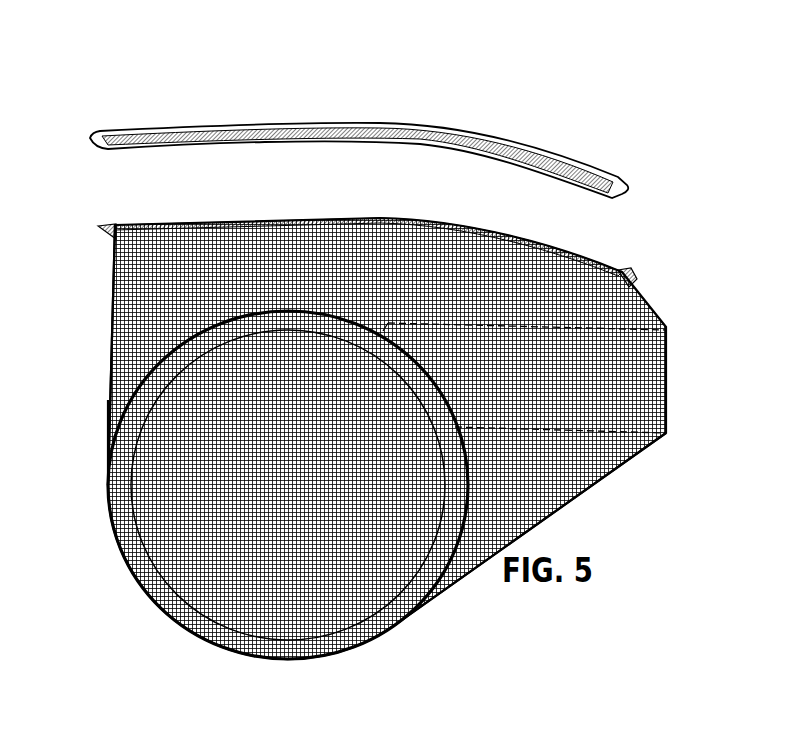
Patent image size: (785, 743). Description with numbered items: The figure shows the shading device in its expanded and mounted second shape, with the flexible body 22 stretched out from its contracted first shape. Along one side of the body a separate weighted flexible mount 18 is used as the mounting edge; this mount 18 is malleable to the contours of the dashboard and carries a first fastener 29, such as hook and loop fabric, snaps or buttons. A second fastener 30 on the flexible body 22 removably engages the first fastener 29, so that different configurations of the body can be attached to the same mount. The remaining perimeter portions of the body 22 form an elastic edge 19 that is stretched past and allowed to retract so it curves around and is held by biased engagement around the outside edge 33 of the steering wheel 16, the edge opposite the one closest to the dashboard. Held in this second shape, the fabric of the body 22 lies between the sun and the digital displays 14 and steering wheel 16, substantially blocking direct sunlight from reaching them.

The digital displays 14 is at (638, 370).
The steering wheel 16 is at (135, 553).
The flexible mount 18 is at (92, 135).
The elastic edge 19 is at (107, 412).
The flexible body 22 is at (113, 310).
The first fastener 29 is at (290, 135).
The second fastener 30 is at (103, 223).
The outside edge 33 is at (280, 654).